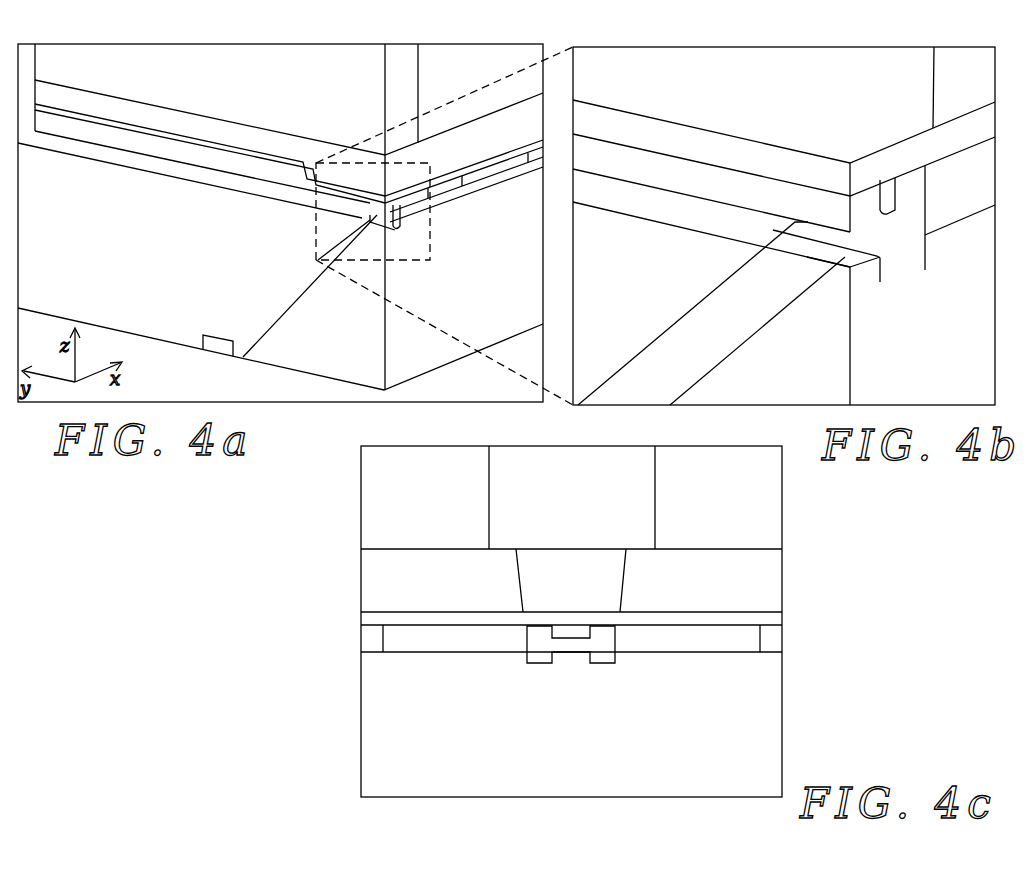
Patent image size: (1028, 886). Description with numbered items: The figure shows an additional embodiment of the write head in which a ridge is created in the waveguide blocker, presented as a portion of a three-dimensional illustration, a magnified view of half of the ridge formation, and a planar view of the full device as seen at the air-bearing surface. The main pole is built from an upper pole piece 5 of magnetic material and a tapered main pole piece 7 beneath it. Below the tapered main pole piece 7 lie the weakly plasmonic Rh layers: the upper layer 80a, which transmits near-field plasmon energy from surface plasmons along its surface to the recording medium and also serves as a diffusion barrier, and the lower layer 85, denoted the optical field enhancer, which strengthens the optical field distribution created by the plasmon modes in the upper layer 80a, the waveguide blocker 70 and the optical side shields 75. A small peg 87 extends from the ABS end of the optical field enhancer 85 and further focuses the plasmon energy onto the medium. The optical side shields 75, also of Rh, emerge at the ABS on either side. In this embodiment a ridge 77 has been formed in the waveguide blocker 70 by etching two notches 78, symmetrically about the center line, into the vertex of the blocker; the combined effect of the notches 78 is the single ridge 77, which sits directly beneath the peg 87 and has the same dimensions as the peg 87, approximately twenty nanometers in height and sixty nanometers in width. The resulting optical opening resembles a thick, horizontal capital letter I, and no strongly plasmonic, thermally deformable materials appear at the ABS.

In FIG. 4a, the lower layer (optical field enhancer) 85 is at (348, 205).
In FIG. 4b, the lower layer (optical field enhancer) 85 is at (656, 170).
In FIG. 4c, the upper pole piece 5 is at (503, 490).
In FIG. 4c, the tapered main pole piece 7 is at (536, 582).
In FIG. 4c, the peg 87 is at (567, 632).
In FIG. 4c, the upper layer 80a is at (378, 617).
In FIG. 4c, the optical side shield 75 is at (398, 640).
In FIG. 4c, the waveguide blocker 70 is at (375, 761).
In FIG. 4c, the notches 78 is at (543, 660).
In FIG. 4c, the ridge 77 is at (573, 655).